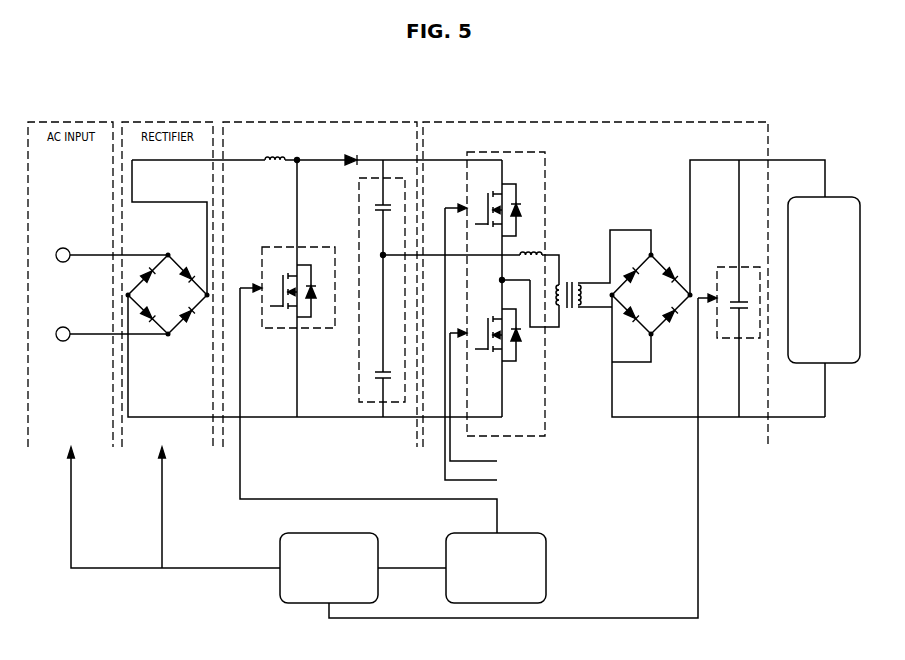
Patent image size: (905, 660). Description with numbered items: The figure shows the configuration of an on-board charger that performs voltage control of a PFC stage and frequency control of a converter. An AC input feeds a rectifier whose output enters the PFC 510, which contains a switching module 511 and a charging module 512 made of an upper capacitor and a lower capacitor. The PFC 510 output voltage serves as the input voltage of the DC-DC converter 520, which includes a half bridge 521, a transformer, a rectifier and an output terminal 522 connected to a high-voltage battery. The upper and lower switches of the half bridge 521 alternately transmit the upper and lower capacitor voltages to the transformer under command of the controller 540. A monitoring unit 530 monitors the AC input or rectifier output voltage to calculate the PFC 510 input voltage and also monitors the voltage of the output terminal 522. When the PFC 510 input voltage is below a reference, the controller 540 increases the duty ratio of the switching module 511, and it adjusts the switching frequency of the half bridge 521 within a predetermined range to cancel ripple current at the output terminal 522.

The PFC 510 is at (376, 122).
The switching module 511 is at (278, 328).
The charging module 512 is at (357, 348).
The DC-DC converter 520 is at (715, 122).
The half bridge 521 is at (546, 213).
The output terminal 522 is at (732, 339).
The monitoring unit 530 is at (338, 533).
The controller 540 is at (517, 533).